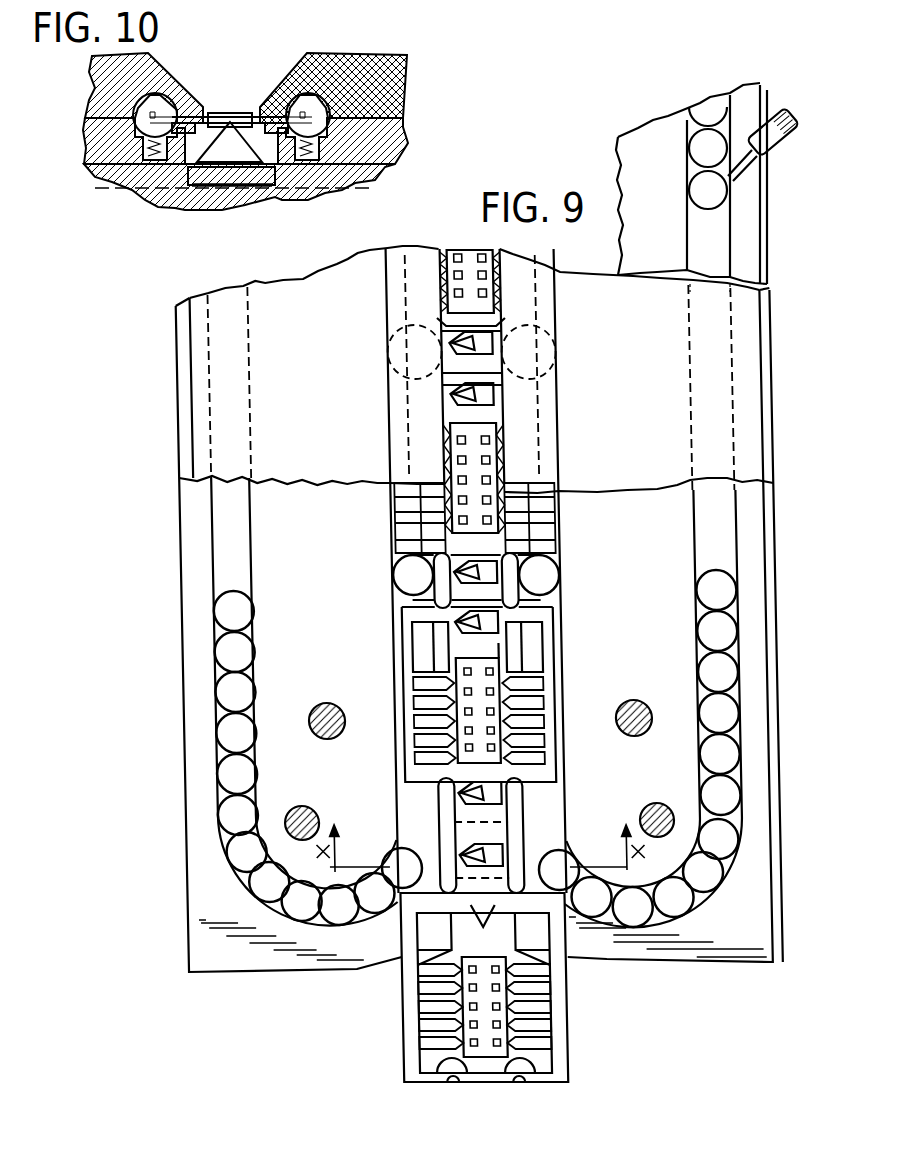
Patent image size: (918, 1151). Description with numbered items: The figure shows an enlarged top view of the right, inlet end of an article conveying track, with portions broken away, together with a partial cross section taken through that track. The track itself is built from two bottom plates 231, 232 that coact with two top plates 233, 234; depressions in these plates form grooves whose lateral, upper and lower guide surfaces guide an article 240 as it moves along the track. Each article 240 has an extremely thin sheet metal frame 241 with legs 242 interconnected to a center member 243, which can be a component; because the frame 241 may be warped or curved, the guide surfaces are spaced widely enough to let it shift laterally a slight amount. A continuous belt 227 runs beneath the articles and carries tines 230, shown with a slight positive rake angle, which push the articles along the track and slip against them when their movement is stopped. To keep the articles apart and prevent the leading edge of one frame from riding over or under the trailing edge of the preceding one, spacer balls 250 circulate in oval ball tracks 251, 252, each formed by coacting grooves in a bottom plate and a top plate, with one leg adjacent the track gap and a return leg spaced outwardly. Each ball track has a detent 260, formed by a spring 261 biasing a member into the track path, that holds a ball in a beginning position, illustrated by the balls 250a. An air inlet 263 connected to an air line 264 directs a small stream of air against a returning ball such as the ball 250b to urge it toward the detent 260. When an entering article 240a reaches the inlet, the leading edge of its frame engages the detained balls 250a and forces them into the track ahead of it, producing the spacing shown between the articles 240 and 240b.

In FIG. 9, the continuous belt 227 is at (498, 643).
In FIG. 10, the tines 230 is at (222, 153).
In FIG. 9, the tines 230 is at (466, 580).
In FIG. 9, the bottom plate 231 is at (655, 679).
In FIG. 9, the bottom plate 232 is at (313, 600).
In FIG. 9, the top plate 233 is at (657, 391).
In FIG. 9, the top plate 234 is at (328, 395).
In FIG. 10, the article 240 is at (230, 100).
In FIG. 9, the article 240 is at (559, 660).
In FIG. 9, the article 240a is at (557, 1000).
In FIG. 9, the article 240b is at (562, 523).
In FIG. 9, the sheet metal frame 241 is at (405, 688).
In FIG. 9, the legs 242 is at (420, 997).
In FIG. 9, the center member 243 is at (498, 955).
In FIG. 9, the spacer balls 250 is at (402, 566).
In FIG. 10, the ball 250a is at (330, 77).
In FIG. 9, the ball 250a is at (382, 855).
In FIG. 9, the ball 250b is at (712, 200).
In FIG. 9, the ball track 251 is at (698, 548).
In FIG. 9, the ball track 252 is at (246, 512).
In FIG. 10, the detent 260 is at (388, 141).
In FIG. 10, the spring 261 is at (343, 168).
In FIG. 9, the air inlet 263 is at (750, 172).
In FIG. 9, the air line 264 is at (783, 125).